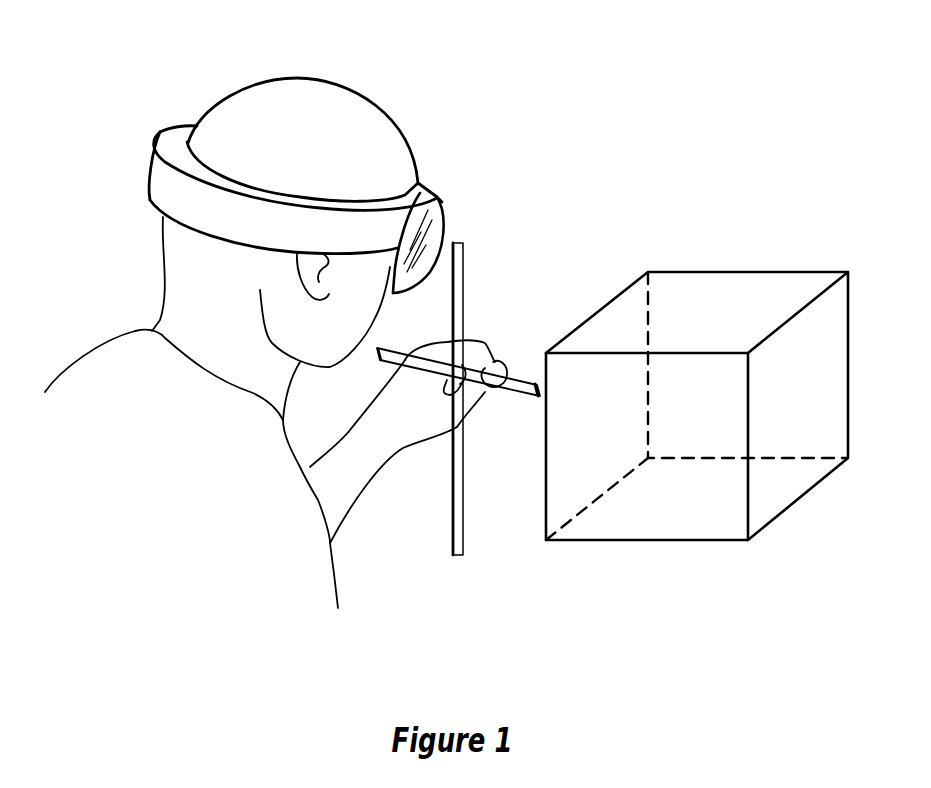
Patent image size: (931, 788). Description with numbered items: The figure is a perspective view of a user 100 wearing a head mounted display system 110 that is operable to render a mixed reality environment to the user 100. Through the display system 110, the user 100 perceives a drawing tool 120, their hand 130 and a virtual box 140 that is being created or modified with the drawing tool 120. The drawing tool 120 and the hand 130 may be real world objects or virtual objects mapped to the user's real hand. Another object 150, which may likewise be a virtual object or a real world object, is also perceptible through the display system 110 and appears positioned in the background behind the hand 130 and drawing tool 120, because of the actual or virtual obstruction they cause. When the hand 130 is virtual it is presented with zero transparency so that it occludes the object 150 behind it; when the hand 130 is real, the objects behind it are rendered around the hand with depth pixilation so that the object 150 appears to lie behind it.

The user 100 is at (292, 76).
The head mounted display system 110 is at (436, 195).
The drawing tool 120 is at (393, 352).
The hand 130 is at (390, 453).
The virtual box 140 is at (643, 542).
The object 150 is at (458, 557).